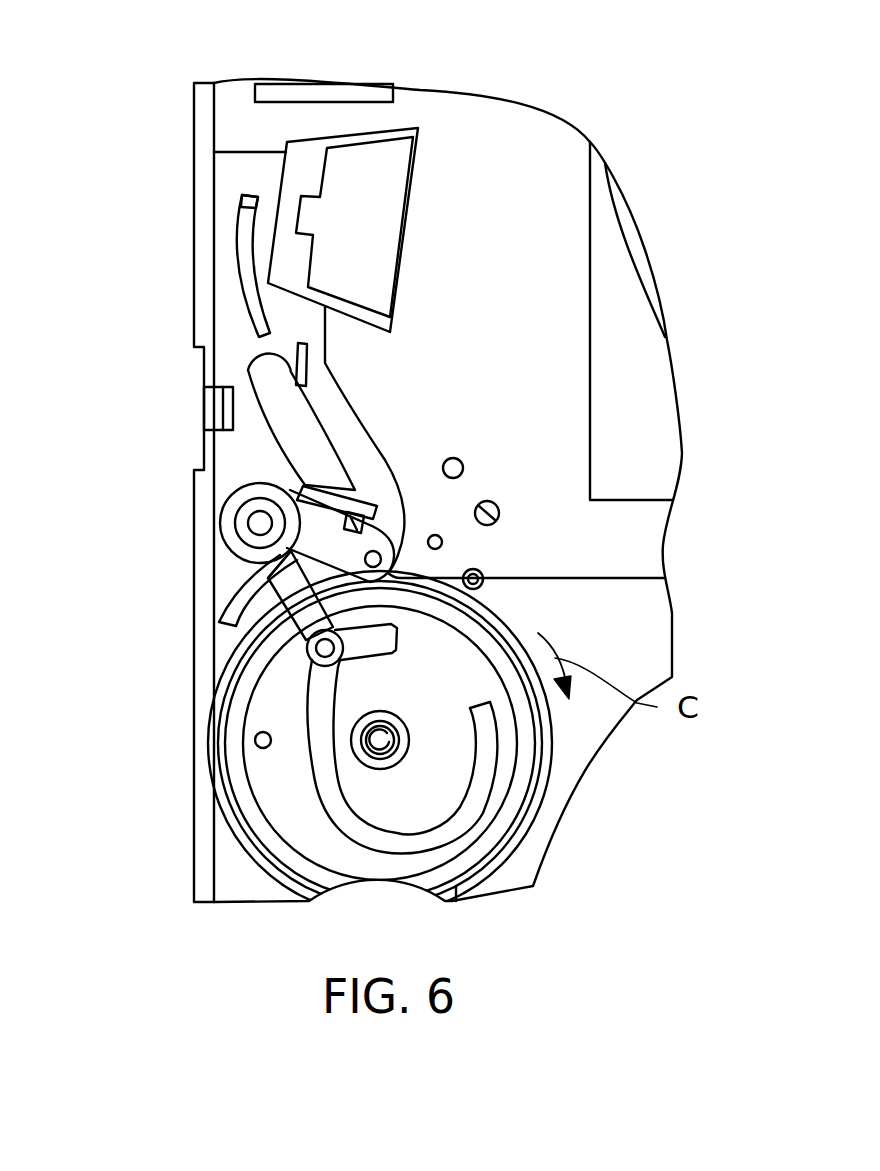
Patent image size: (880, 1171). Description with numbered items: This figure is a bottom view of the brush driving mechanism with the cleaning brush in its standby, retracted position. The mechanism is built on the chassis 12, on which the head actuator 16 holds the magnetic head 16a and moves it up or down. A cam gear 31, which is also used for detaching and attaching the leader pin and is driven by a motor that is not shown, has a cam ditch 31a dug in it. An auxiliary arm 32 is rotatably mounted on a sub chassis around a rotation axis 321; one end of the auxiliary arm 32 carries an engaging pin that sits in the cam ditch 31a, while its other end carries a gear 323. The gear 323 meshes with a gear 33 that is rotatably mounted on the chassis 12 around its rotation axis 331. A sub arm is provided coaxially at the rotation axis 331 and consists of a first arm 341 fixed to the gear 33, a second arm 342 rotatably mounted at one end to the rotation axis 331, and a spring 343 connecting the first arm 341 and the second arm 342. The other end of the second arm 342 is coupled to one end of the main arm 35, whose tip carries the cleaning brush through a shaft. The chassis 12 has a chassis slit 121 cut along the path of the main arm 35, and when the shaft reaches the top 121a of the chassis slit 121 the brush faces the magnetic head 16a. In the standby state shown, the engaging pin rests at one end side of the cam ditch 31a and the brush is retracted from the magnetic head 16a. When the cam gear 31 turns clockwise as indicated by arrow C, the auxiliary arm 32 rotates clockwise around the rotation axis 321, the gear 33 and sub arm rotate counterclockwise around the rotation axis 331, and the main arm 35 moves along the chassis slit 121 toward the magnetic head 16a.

The chassis 12 is at (206, 878).
The head actuator 16 is at (410, 200).
The magnetic head 16a is at (309, 203).
The chassis slit 121 is at (237, 277).
The top (tip portion) of the chassis slit 121a is at (257, 197).
The main arm 35 is at (288, 418).
The gear 33 is at (220, 512).
The rotation axis of the gear 331 is at (248, 524).
The first arm 341 is at (300, 484).
The spring 343 is at (290, 496).
The second arm 342 is at (233, 604).
The auxiliary arm 32 is at (300, 604).
The rotation axis of the auxiliary arm 321 is at (307, 648).
The gear of the auxiliary arm 323 is at (268, 580).
The cam gear 31 is at (237, 798).
The cam ditch 31a is at (311, 752).